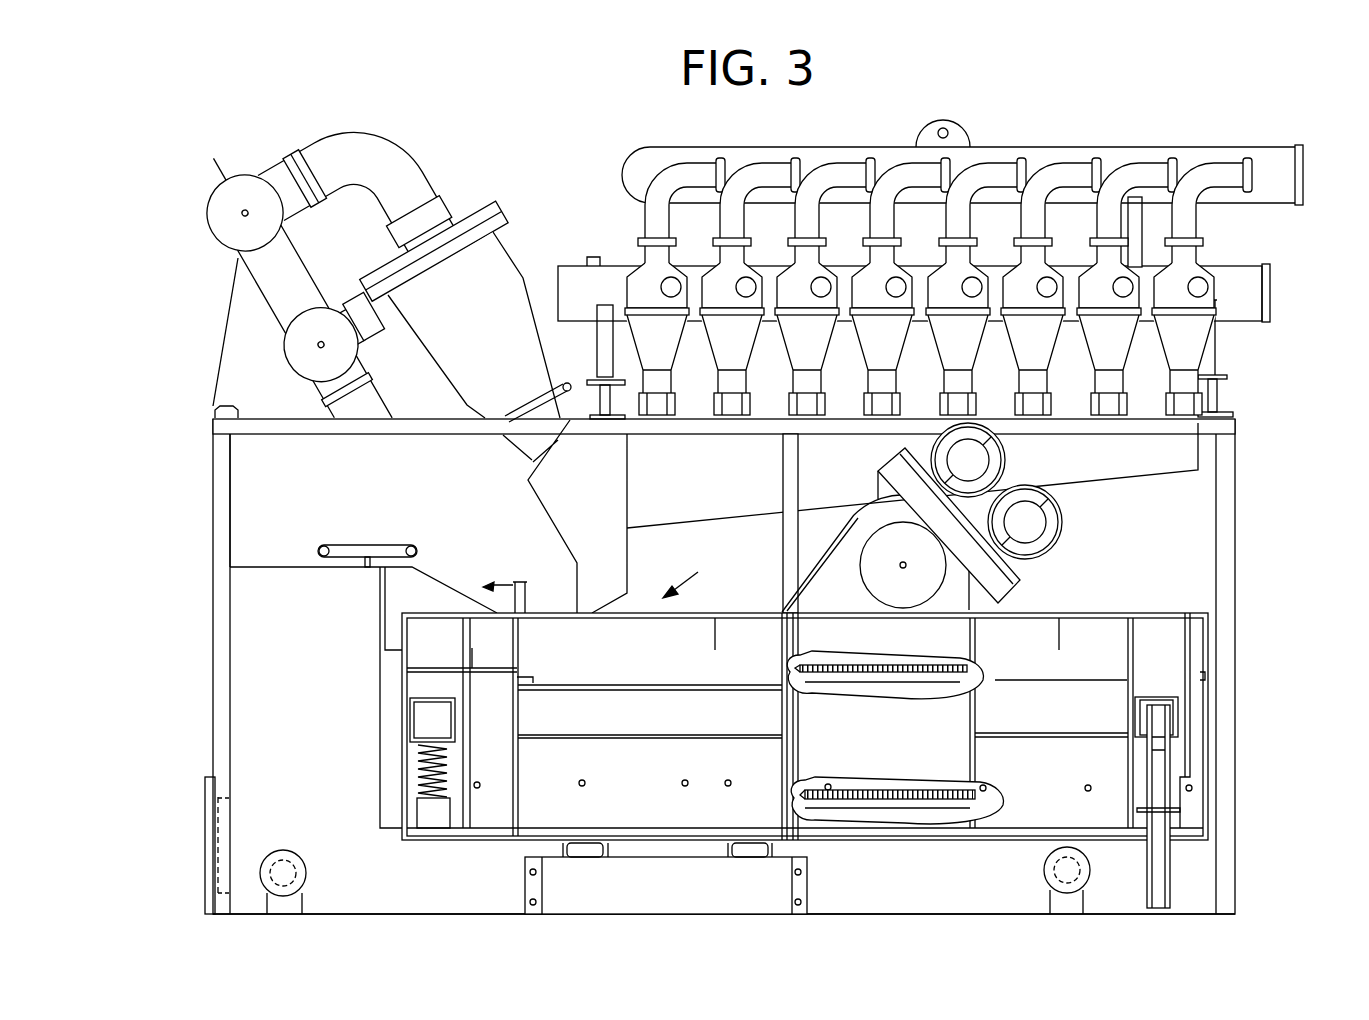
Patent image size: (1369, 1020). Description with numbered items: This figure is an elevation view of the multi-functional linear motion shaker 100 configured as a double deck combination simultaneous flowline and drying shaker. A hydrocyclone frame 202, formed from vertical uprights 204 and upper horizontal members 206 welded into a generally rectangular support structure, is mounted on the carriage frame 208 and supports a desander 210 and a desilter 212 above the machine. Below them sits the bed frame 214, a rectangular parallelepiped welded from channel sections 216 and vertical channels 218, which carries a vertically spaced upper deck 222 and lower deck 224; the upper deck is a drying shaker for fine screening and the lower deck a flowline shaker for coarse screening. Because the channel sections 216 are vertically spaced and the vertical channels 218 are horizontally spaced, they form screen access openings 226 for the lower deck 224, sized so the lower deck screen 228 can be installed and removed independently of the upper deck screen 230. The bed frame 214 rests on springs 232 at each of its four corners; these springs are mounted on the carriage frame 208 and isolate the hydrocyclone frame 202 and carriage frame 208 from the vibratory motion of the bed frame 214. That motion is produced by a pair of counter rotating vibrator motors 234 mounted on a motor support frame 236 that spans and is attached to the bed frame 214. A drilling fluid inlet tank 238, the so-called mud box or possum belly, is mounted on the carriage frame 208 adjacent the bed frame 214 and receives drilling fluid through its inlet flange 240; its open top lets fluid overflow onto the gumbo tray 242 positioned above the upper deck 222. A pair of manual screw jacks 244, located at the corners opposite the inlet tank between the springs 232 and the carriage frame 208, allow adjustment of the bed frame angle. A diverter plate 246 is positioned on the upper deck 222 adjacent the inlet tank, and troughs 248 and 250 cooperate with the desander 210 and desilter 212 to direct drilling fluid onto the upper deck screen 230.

The multi-functional linear motion shaker 100 is at (1262, 546).
The hydrocyclone frame 202 is at (212, 632).
The vertical uprights 204 is at (230, 507).
The upper horizontal members 206 is at (658, 434).
The carriage frame 208 is at (933, 888).
The desander 210 is at (465, 214).
The desilter 212 is at (987, 146).
The bed frame 214 is at (703, 577).
The channel sections 216 is at (604, 735).
The vertical channels 218 is at (515, 707).
The upper deck 222 is at (977, 664).
The lower deck 224 is at (1000, 790).
The screen access openings 226 is at (744, 726).
The lower deck screen 228 is at (910, 778).
The upper deck screen 230 is at (902, 651).
The springs 232 is at (417, 777).
The vibrator motors 234 is at (1003, 453).
The motor support frame 236 is at (797, 533).
The drilling fluid inlet tank 238 is at (238, 677).
The inlet flange 240 is at (205, 803).
The gumbo tray 242 is at (430, 575).
The manual screw jacks 244 is at (1178, 718).
The diverter plate 246 is at (430, 675).
The trough 248 is at (1123, 483).
The trough 250 is at (627, 492).